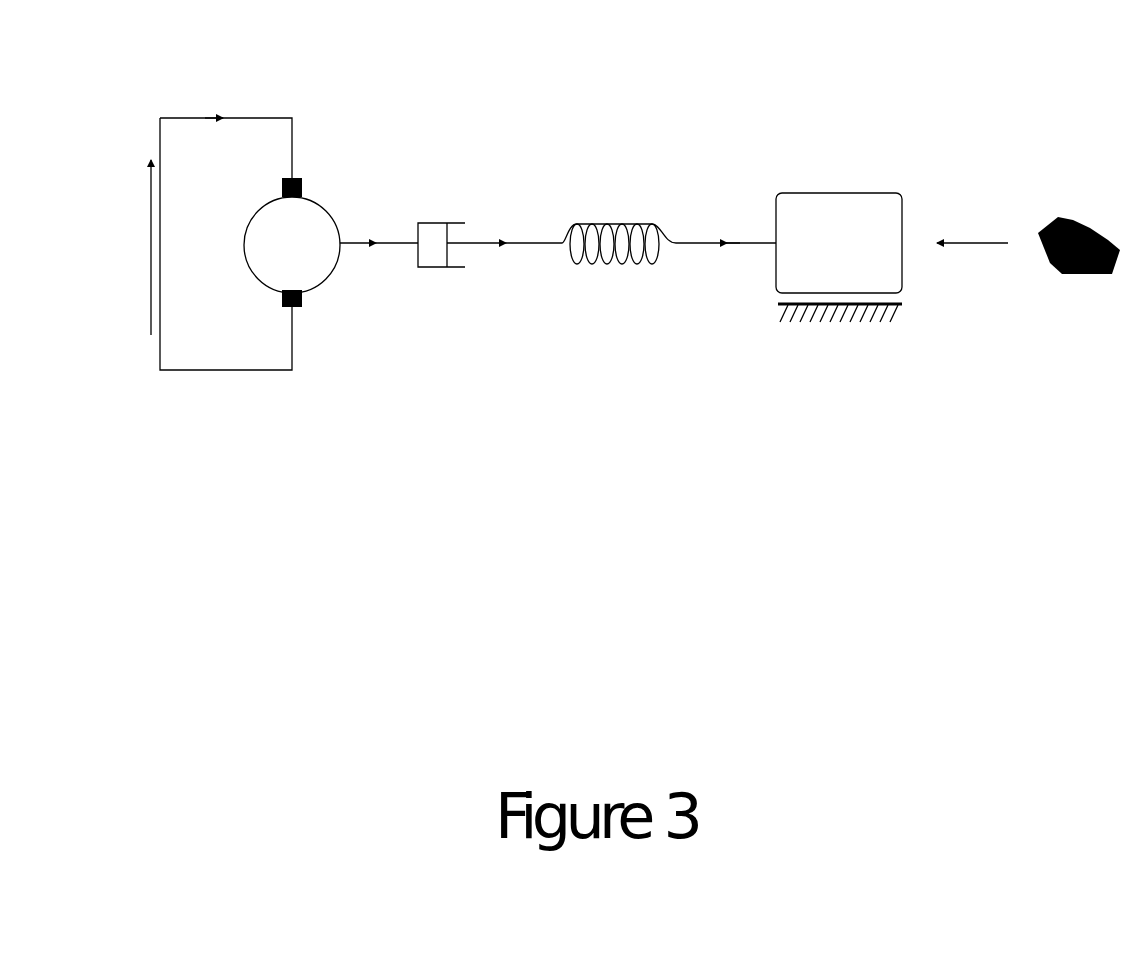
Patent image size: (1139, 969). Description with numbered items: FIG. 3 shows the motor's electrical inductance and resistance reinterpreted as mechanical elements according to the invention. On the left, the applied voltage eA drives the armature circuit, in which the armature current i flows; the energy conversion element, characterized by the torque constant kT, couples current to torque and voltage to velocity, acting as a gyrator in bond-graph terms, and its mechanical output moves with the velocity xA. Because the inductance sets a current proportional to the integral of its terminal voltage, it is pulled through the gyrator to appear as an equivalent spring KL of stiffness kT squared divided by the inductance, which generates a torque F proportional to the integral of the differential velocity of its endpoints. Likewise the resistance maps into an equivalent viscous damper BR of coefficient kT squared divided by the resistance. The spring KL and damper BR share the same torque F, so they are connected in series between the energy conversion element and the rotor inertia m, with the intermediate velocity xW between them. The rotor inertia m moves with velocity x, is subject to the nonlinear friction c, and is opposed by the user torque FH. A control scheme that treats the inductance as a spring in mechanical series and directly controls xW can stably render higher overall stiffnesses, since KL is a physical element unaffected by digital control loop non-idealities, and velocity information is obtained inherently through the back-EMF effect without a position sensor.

The armature current i is at (226, 216).
The applied armature voltage eA is at (114, 247).
The torque constant kT is at (292, 242).
The armature-side velocity xA is at (379, 275).
The equivalent viscous damper BR is at (433, 218).
The intermediate velocity xW is at (504, 275).
The equivalent spring KL is at (619, 216).
The torque F is at (726, 215).
The rotor motion velocity x is at (728, 274).
The rotor inertia m is at (839, 243).
The friction c is at (856, 325).
The user torque FH is at (1028, 232).